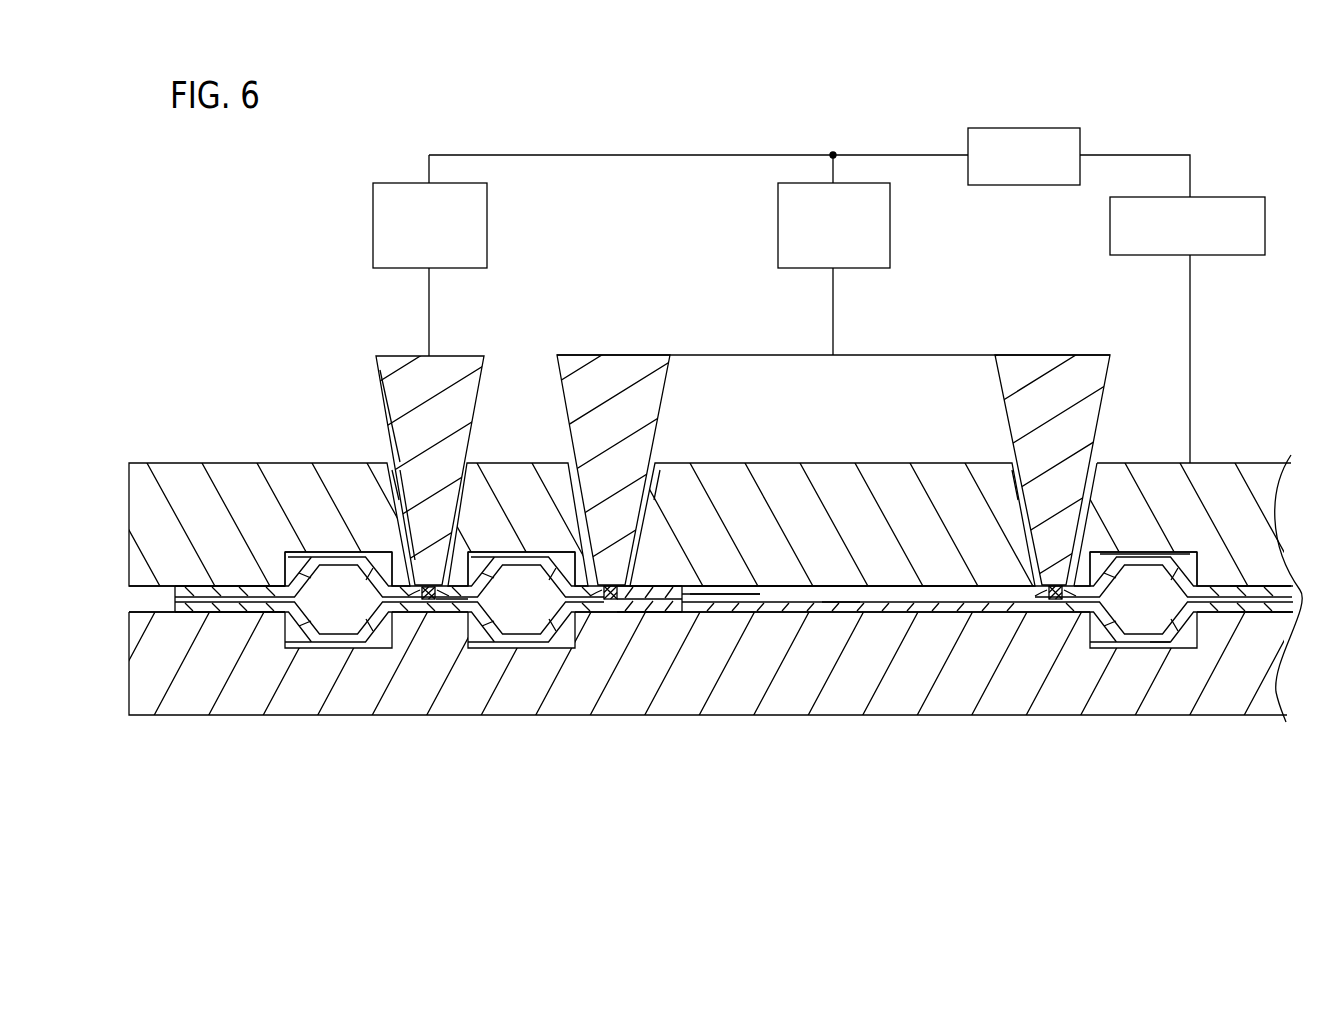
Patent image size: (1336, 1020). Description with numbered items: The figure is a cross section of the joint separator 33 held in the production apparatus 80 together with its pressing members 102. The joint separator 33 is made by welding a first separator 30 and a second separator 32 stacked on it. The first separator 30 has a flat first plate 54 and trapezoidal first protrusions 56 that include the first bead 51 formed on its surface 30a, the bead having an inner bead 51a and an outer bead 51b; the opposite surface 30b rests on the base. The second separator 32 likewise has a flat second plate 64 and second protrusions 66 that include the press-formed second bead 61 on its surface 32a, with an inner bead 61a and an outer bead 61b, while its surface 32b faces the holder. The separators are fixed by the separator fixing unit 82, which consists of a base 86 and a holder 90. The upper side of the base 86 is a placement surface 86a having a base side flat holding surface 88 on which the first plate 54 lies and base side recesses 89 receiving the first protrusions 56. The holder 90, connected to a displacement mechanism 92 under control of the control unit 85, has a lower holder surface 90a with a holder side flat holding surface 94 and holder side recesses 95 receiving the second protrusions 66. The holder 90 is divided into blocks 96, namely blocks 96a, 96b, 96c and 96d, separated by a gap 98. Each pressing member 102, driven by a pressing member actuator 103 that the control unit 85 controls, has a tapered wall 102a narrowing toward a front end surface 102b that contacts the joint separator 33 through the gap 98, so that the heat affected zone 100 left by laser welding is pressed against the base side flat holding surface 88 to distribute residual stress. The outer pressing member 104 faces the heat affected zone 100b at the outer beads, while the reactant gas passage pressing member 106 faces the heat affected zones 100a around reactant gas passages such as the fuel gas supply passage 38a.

The production apparatus 80 is at (285, 290).
The pressing member actuator 103 is at (372, 227).
The control unit 85 is at (1024, 186).
The displacement mechanism 92 is at (1224, 196).
The pressing member 102 is at (668, 491).
The outer pressing member 104 is at (405, 356).
The reactant gas passage pressing member 106 is at (638, 356).
The wall 102a is at (374, 369).
The front end surface 102b is at (408, 582).
The gap 98 is at (397, 475).
The separator fixing unit 82 is at (707, 573).
The holder 90 is at (707, 541).
The holder surface 90a is at (132, 590).
The block 96 is at (707, 541).
The block 96a is at (230, 482).
The block 96b is at (519, 482).
The block 96c is at (720, 482).
The block 96d is at (1196, 564).
The base 86 is at (845, 690).
The placement surface 86a is at (133, 606).
The second protrusions 66 is at (741, 491).
The inner bead 61a is at (1142, 550).
The outer bead 61b is at (310, 550).
The second bead 61 is at (1158, 544).
The joint separator 33 is at (734, 593).
The second separator 32 is at (192, 580).
The surface 32a is at (1260, 596).
The upper end plate surface 32b is at (1226, 598).
The first separator 30 is at (193, 620).
The surface 30a is at (1216, 608).
The lower end plate surface 30b is at (1256, 602).
The holder side flat holding surface 94 is at (378, 594).
The first protrusions 56 is at (742, 677).
The inner bead 51a is at (528, 640).
The outer bead 51b is at (343, 640).
The first bead 51 is at (1166, 657).
The holder side recesses 95 is at (290, 553).
The base side recesses 89 is at (285, 638).
The heat affected zone 100 is at (731, 689).
The heat affected zone 100a is at (611, 602).
The heat affected zone 100b is at (429, 602).
The base side flat holding surface 88 is at (430, 603).
The second plate 64 is at (661, 590).
The first plate 54 is at (655, 614).
The fuel gas supply passage 38a is at (739, 600).